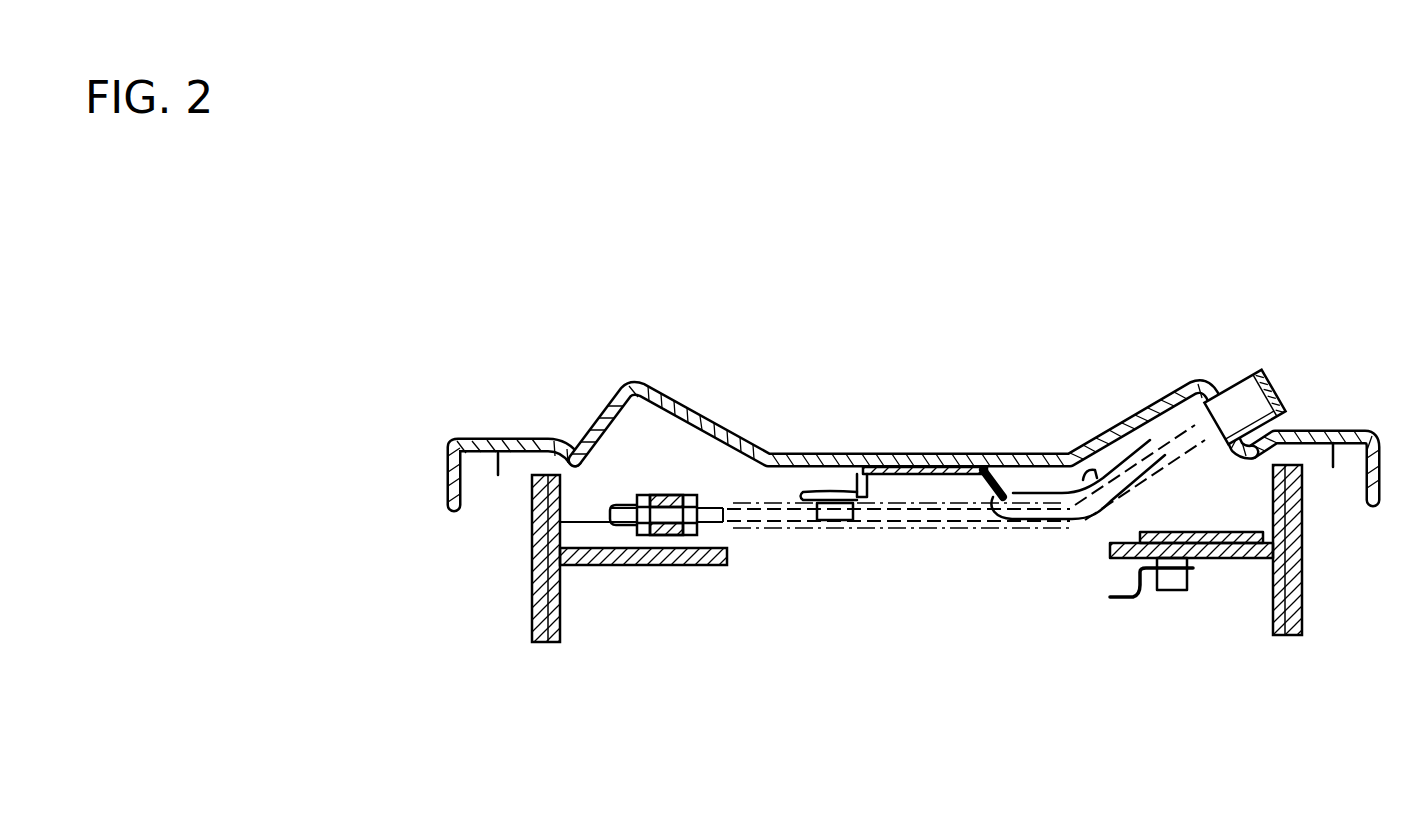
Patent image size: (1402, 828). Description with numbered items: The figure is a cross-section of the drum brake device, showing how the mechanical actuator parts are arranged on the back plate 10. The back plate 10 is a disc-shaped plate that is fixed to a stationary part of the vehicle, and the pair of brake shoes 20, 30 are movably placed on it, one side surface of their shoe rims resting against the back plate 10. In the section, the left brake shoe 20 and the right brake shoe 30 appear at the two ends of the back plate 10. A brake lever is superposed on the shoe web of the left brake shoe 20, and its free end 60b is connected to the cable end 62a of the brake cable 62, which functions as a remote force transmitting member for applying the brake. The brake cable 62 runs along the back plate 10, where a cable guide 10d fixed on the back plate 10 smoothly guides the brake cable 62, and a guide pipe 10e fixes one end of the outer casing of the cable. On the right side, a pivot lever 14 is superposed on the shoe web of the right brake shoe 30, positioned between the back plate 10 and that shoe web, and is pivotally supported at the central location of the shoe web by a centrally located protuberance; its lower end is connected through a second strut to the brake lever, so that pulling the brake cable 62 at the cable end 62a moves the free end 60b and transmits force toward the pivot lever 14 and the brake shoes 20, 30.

The back plate 10 is at (886, 446).
The cable guide 10d is at (1020, 455).
The guide pipe 10e is at (1243, 372).
The pivot lever 14 is at (1212, 530).
The brake shoe 20 is at (551, 652).
The brake shoe 30 is at (1292, 649).
The free end 60b is at (692, 495).
The brake cable 62 is at (807, 523).
The cable end 62a is at (621, 503).